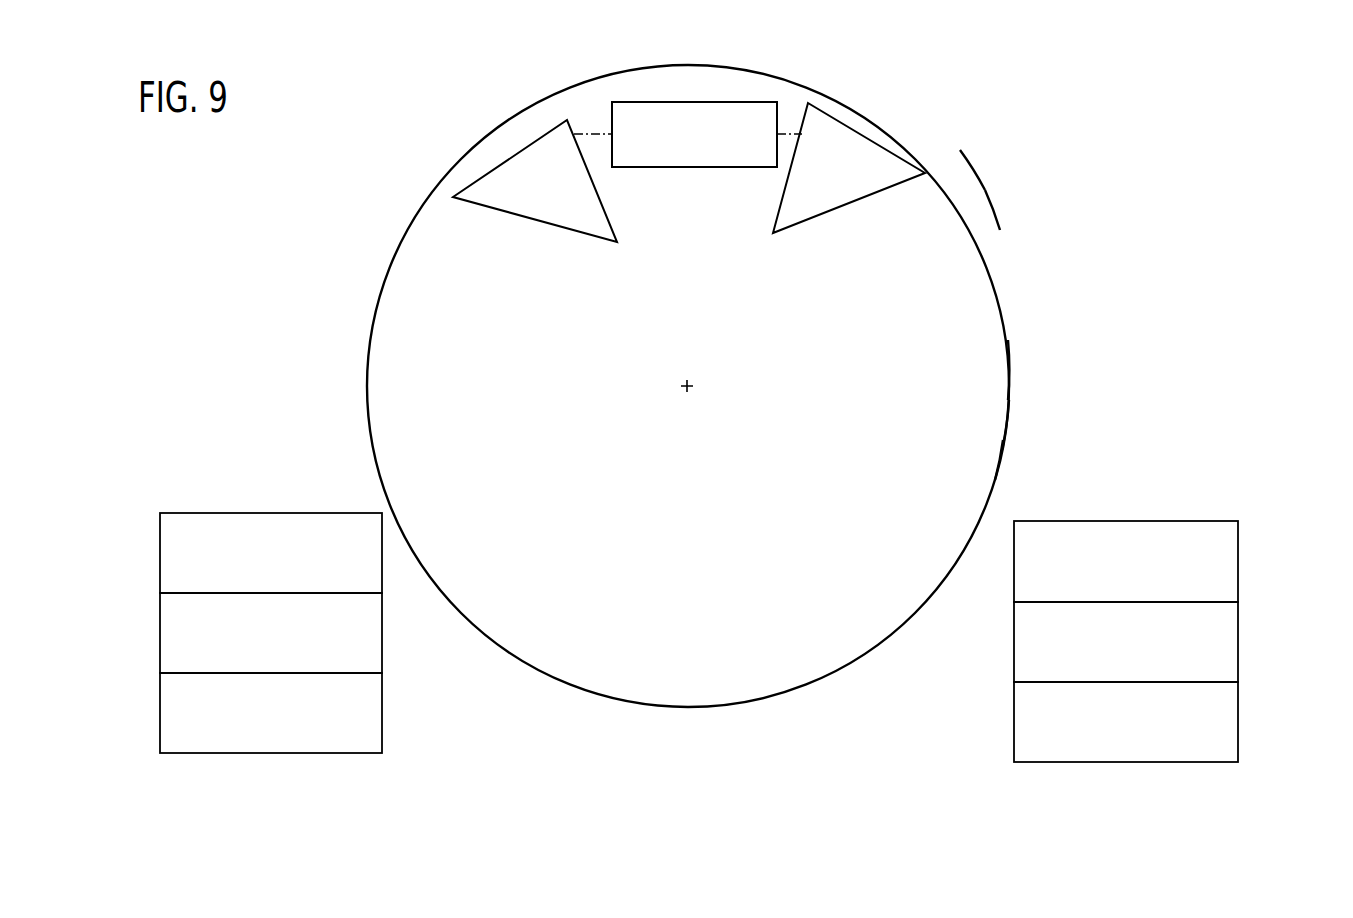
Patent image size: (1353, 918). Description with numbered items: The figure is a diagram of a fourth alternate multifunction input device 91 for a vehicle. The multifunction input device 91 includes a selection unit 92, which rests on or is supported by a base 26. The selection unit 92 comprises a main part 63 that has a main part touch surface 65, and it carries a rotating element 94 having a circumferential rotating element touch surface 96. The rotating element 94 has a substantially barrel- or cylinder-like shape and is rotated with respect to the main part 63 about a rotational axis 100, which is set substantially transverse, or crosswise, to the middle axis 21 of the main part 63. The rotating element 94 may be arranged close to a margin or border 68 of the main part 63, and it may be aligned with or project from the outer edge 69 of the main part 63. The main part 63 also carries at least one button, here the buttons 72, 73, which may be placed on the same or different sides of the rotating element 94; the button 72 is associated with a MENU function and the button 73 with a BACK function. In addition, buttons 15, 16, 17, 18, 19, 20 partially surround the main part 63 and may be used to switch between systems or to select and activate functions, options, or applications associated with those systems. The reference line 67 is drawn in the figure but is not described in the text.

The button 15 is at (170, 553).
The button 16 is at (170, 633).
The button 17 is at (170, 713).
The button 18 is at (1223, 718).
The button 19 is at (1223, 638).
The button 20 is at (1223, 558).
The middle axis 21 is at (693, 392).
The base 26 is at (1157, 394).
The main part 63 is at (993, 373).
The main part touch surface 65 is at (978, 415).
The display border 67 is at (973, 456).
The border 68 is at (688, 378).
The outer edge 69 is at (893, 131).
The button 72 is at (875, 197).
The button 73 is at (550, 225).
The multifunction input device 91 is at (1005, 195).
The selection unit 92 is at (1042, 213).
The rotating element 94 is at (694, 83).
The circumferential rotating element touch surface 96 is at (680, 98).
The rotational axis 100 is at (583, 132).